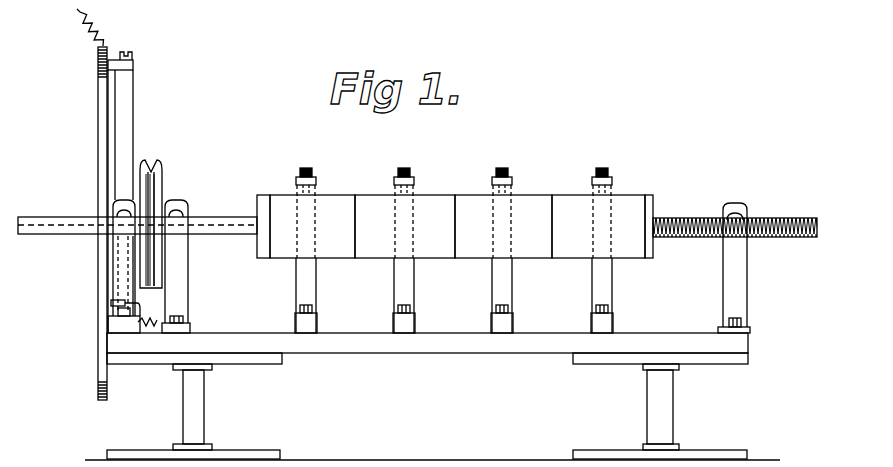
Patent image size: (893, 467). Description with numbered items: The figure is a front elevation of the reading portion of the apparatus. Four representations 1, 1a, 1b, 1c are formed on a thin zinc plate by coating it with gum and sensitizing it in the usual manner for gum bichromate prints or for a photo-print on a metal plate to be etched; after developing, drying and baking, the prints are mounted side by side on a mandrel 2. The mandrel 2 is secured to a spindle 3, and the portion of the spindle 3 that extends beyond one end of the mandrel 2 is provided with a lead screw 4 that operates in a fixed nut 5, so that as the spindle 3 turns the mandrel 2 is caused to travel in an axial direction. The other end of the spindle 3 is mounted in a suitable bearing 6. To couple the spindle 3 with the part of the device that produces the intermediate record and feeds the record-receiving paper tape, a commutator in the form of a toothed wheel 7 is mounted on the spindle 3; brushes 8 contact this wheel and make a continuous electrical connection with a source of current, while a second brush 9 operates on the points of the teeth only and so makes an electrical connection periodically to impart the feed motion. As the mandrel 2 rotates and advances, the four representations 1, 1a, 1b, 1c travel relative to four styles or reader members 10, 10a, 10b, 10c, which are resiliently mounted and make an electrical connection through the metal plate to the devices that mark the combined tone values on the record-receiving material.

The representation 1 is at (324, 199).
The representation 1a is at (426, 200).
The representation 1b is at (527, 201).
The representation 1c is at (569, 201).
The mandrel 2 is at (257, 255).
The spindle 3 is at (220, 226).
The lead screw 4 is at (735, 213).
The fixed nut 5 is at (737, 203).
The bearing 6 is at (182, 201).
The toothed wheel 7 is at (100, 121).
The brushes 8 is at (110, 304).
The second brush 9 is at (103, 50).
The style 10 is at (292, 190).
The style 10a is at (392, 190).
The style 10b is at (490, 190).
The style 10c is at (591, 186).